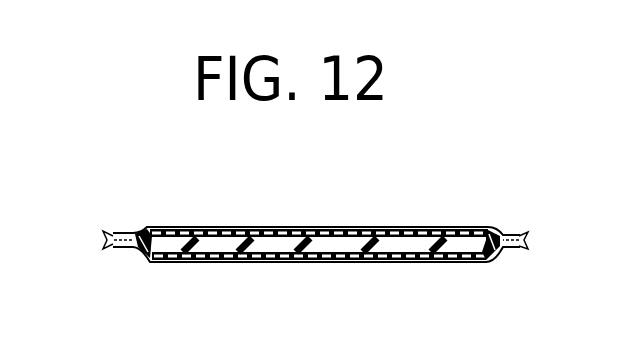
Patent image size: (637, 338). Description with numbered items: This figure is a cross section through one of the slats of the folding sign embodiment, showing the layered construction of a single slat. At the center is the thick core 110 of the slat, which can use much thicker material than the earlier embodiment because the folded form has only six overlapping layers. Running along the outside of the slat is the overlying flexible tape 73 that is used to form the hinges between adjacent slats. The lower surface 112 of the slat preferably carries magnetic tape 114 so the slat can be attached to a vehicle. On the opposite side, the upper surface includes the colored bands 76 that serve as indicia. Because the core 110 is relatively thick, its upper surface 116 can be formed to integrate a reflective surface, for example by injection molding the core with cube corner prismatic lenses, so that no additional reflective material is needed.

The flexible tape 73 is at (136, 228).
The colored bands 76 is at (344, 228).
The core 110 is at (462, 246).
The lower surface 112 is at (211, 272).
The magnetic tape 114 is at (398, 262).
The upper surface 116 is at (443, 224).